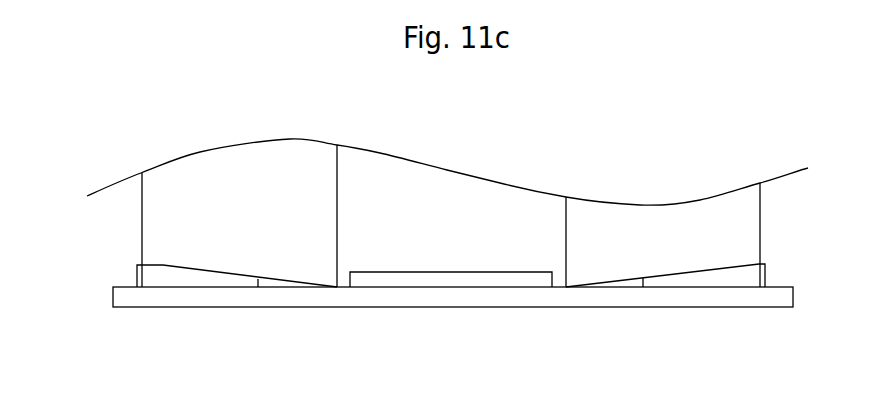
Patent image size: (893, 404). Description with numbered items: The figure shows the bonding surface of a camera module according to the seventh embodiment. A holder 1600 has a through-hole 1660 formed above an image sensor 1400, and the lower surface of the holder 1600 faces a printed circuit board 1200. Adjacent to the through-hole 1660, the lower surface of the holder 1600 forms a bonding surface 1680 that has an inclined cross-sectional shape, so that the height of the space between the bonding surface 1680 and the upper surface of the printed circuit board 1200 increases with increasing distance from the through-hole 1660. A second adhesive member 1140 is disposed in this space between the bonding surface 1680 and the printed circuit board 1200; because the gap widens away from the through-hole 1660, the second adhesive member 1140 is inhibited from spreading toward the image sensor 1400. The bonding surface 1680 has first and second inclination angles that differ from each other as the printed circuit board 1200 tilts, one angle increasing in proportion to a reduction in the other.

The through-hole 1660 is at (447, 185).
The holder 1600 is at (748, 225).
The second adhesive member 1140 is at (747, 276).
The bonding surface 1680 is at (163, 267).
The image sensor 1400 is at (449, 278).
The printed circuit board 1200 is at (185, 300).